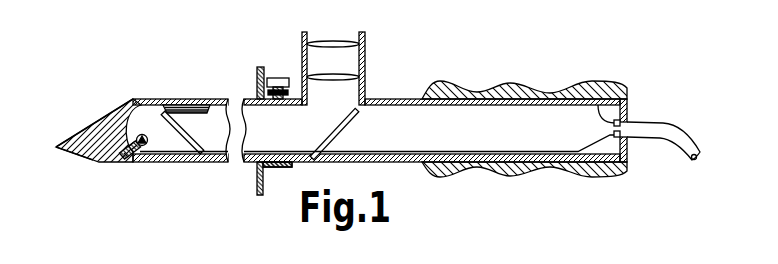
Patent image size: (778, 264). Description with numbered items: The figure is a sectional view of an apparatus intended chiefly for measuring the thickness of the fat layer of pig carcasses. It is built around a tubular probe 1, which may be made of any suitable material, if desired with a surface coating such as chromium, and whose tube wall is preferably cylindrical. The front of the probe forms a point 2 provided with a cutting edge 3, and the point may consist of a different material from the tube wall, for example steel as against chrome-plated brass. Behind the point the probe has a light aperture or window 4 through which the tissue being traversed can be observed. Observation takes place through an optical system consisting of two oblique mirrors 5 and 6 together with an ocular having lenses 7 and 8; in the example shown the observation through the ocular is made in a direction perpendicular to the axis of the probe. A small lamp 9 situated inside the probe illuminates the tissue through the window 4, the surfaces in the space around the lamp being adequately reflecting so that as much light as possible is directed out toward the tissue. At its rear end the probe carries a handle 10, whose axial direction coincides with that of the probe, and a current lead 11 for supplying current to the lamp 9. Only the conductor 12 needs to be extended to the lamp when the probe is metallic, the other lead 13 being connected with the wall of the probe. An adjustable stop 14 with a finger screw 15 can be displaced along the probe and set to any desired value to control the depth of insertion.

The tubular probe 1 is at (247, 172).
The point 2 is at (96, 152).
The cutting edge 3 is at (88, 130).
The window 4 is at (194, 110).
The oblique mirror 5 is at (194, 138).
The oblique mirror 6 is at (333, 135).
The lens 7 is at (343, 77).
The lens 8 is at (330, 44).
The lamp 9 is at (148, 148).
The handle 10 is at (516, 89).
The current lead 11 is at (655, 128).
The conductor 12 is at (512, 151).
The lead 13 is at (600, 116).
The adjustable stop 14 is at (258, 68).
The finger screw 15 is at (277, 78).